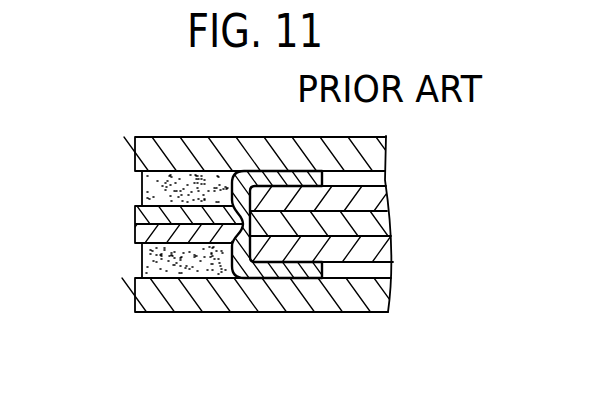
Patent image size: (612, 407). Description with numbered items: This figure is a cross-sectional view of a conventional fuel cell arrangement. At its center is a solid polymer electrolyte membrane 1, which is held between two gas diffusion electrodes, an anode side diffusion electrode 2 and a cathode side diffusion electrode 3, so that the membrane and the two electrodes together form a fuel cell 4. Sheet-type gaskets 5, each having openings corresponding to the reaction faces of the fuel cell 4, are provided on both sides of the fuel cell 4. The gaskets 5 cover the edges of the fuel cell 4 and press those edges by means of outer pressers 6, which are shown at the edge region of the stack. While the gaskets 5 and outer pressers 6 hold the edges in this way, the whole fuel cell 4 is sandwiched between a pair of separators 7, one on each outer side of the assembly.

The solid polymer electrolyte membrane 1 is at (392, 228).
The anode side diffusion electrode 2 is at (388, 203).
The cathode side diffusion electrode 3 is at (359, 254).
The fuel cell 4 is at (375, 224).
The sheet-type gasket 5 is at (274, 272).
The outer presser 6 is at (158, 266).
The separator 7 is at (452, 300).